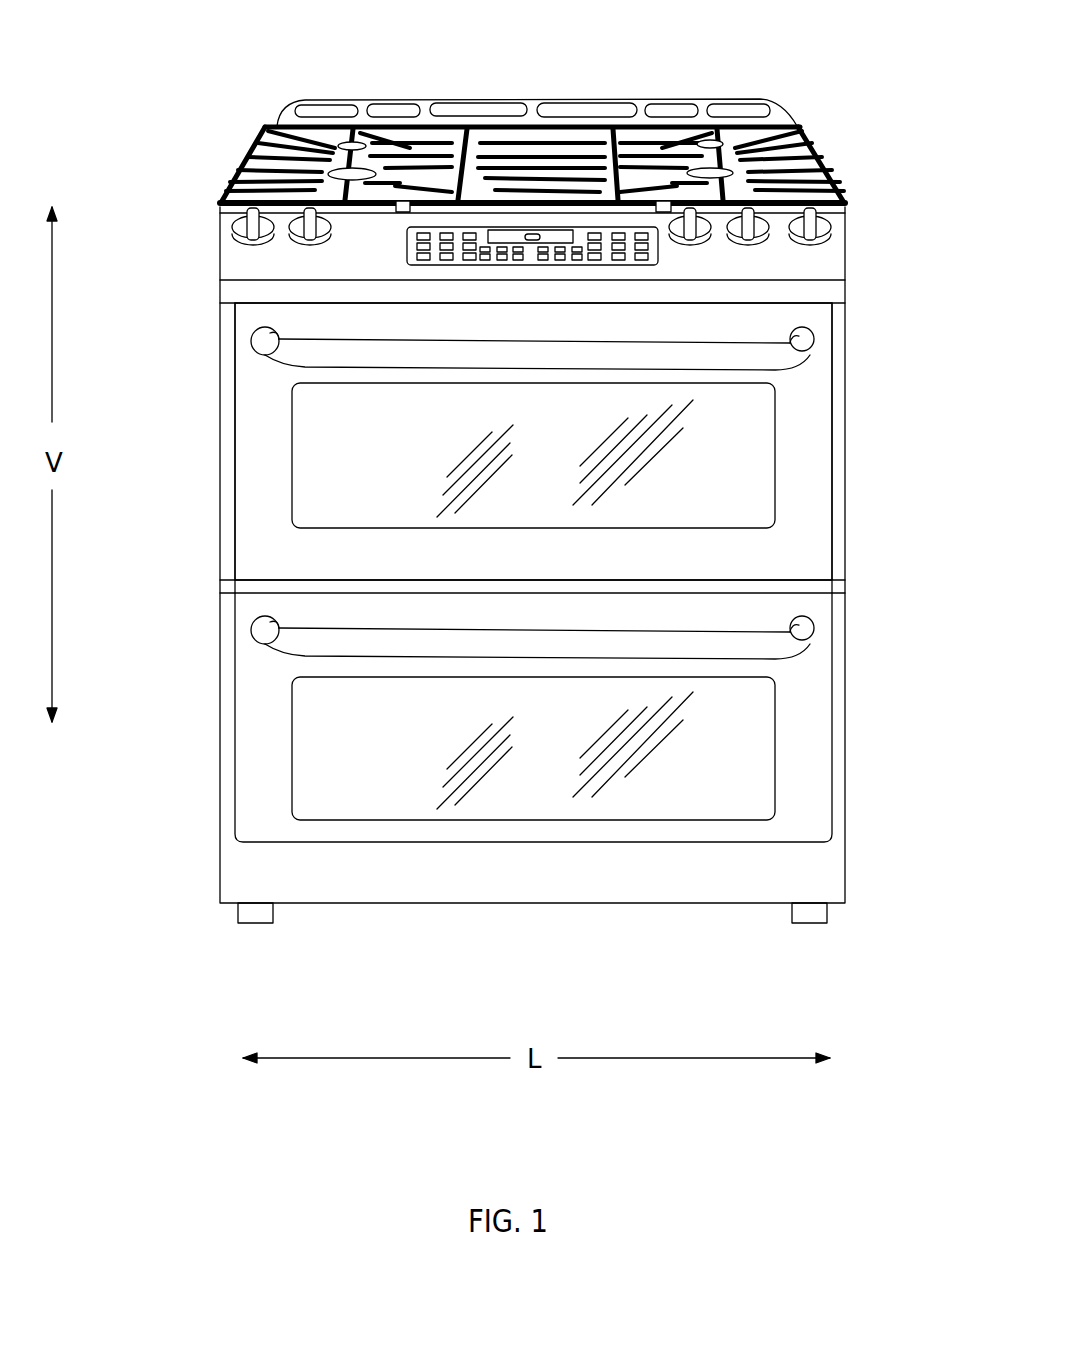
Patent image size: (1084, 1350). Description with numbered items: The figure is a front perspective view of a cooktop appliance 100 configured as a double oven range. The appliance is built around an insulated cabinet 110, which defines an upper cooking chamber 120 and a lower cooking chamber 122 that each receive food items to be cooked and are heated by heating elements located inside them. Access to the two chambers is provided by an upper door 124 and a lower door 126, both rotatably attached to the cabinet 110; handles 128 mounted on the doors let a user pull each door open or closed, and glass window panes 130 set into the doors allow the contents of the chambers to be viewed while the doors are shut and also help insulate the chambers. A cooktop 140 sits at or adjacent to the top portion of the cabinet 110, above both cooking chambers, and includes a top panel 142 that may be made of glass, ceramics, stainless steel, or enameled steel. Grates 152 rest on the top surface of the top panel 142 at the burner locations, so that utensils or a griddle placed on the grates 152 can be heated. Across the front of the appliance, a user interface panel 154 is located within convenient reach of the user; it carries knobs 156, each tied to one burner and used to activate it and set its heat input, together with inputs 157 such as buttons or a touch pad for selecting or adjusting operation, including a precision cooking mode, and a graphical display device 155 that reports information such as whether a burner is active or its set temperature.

The cooktop appliance 100 is at (200, 118).
The insulated cabinet 110 is at (705, 290).
The upper cooking chamber 120 is at (800, 462).
The lower cooking chamber 122 is at (805, 768).
The upper door 124 is at (228, 512).
The lower door 126 is at (228, 778).
The handle 128 is at (357, 355).
The glass window pane 130 is at (750, 505).
The cooktop 140 is at (802, 118).
The top panel 142 is at (838, 207).
The grate 152 is at (817, 147).
The user interface panel 154 is at (410, 250).
The graphical display device 155 is at (505, 233).
The knob 156 is at (297, 241).
The input 157 is at (487, 262).